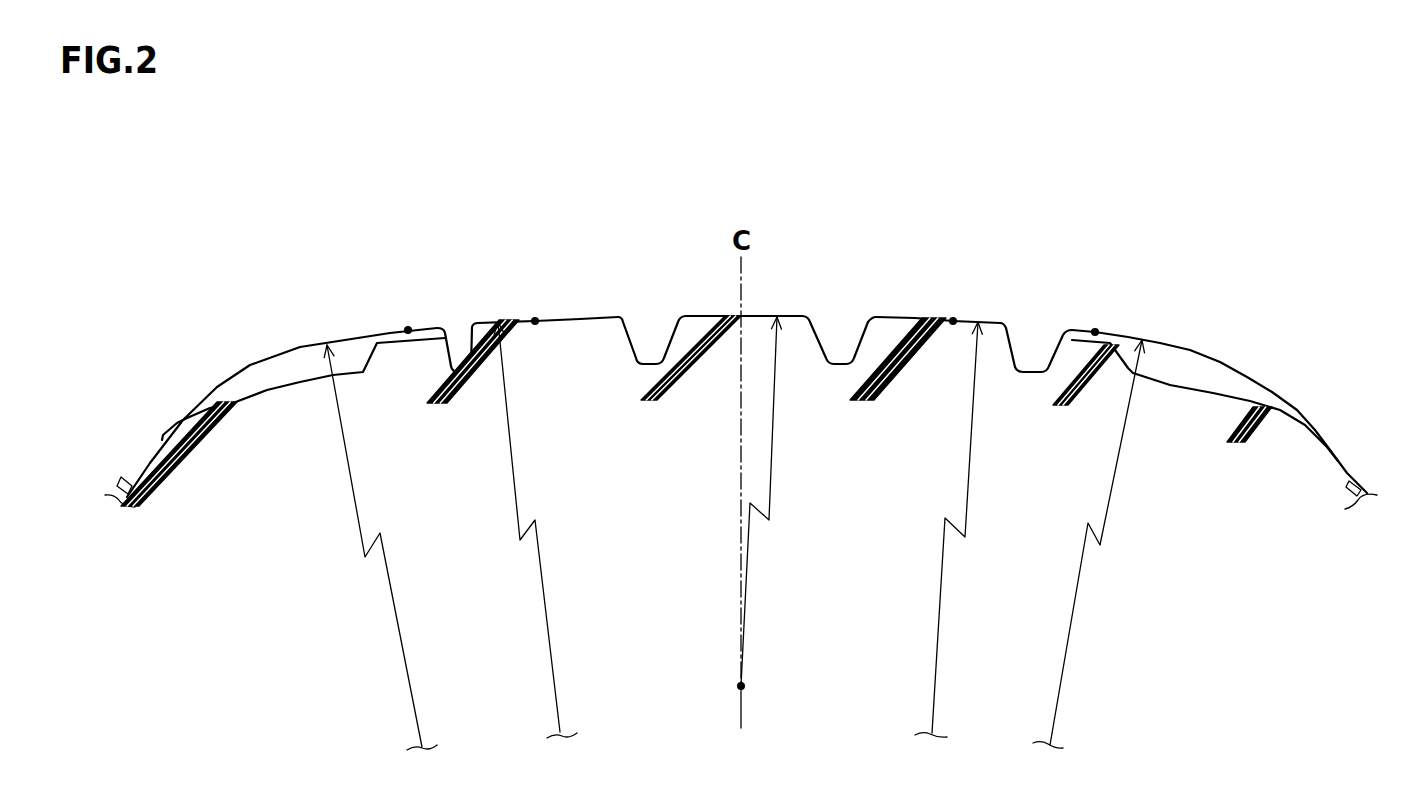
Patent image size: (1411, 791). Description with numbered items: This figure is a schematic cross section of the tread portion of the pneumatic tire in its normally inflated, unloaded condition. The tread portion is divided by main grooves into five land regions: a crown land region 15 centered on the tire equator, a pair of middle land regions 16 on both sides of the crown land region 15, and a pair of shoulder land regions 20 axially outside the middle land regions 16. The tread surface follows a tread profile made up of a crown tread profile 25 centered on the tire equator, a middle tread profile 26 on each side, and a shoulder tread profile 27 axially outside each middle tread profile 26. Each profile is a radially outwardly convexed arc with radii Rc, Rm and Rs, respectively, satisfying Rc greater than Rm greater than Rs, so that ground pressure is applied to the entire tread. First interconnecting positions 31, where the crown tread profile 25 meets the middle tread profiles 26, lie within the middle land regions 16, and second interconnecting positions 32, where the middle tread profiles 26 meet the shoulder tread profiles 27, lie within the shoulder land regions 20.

The crown land region 15 is at (757, 313).
The middle land region 16 is at (570, 317).
The shoulder land region 20 is at (353, 337).
The crown tread profile 25 is at (708, 313).
The middle tread profile 26 is at (520, 322).
The shoulder tread profile 27 is at (296, 342).
The first interconnecting position 31 is at (535, 321).
The second interconnecting position 32 is at (408, 330).